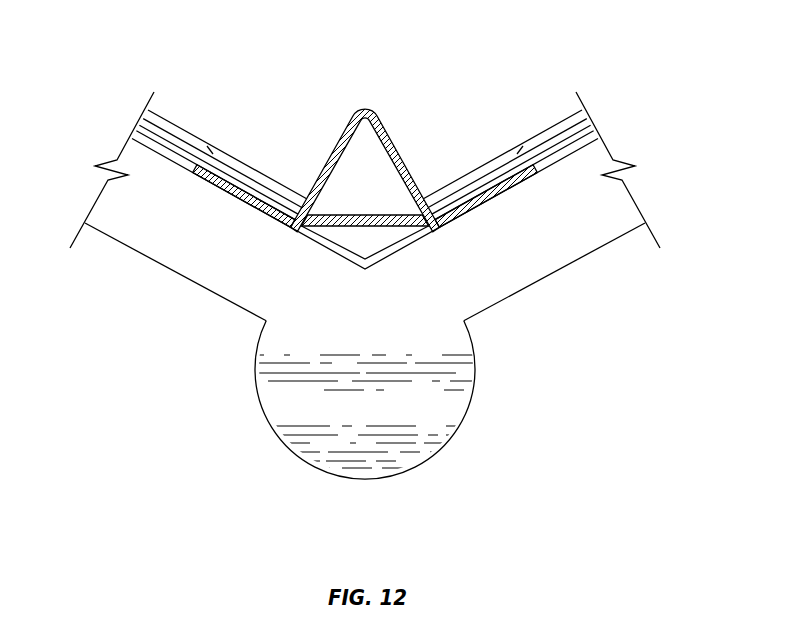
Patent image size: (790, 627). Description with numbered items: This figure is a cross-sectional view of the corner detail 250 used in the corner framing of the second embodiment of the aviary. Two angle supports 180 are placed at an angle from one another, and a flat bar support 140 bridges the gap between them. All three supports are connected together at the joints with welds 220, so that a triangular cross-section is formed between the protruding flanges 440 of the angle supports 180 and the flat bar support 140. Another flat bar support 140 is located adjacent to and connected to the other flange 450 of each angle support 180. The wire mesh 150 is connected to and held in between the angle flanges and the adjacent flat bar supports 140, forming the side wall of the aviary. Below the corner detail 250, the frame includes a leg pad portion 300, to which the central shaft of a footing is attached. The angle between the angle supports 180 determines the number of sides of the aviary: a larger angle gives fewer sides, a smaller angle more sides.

The corner detail 250 is at (246, 50).
The leg pad portion 300 is at (448, 408).
The angle supports 180 is at (310, 127).
The wire mesh 150 is at (598, 119).
The other flange 450 is at (215, 190).
The flat bar support 140 is at (216, 151).
The welds 220 is at (364, 107).
The protruding flanges 440 is at (324, 171).